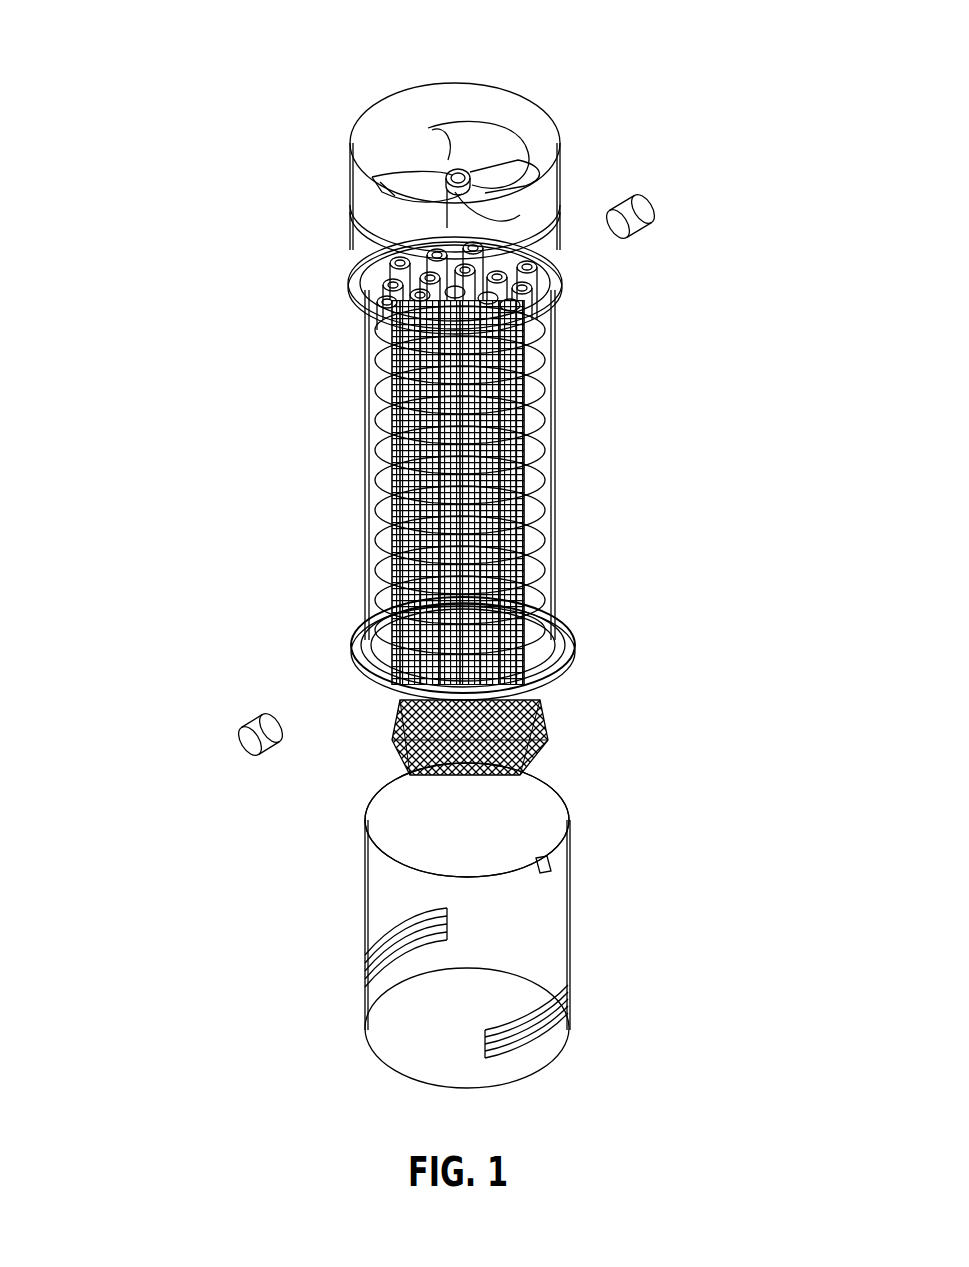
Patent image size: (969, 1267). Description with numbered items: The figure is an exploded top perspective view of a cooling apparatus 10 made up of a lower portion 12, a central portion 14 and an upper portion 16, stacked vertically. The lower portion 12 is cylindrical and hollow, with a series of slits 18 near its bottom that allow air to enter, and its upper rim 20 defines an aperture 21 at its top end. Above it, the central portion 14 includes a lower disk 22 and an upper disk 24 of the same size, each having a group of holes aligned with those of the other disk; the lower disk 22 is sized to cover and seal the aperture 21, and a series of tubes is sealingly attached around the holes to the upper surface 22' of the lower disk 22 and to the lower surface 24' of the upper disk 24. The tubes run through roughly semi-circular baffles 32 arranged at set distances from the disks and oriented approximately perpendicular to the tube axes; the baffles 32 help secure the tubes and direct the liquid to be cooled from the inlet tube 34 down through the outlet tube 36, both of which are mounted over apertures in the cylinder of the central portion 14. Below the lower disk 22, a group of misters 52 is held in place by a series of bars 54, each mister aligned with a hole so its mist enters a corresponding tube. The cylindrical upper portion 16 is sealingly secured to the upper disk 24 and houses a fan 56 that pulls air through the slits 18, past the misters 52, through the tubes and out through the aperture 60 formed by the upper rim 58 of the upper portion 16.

The cooling apparatus 10 is at (317, 423).
The lower portion 12 is at (596, 926).
The central portion 14 is at (585, 372).
The upper portion 16 is at (303, 195).
The slits 18 is at (545, 1035).
The upper rim 20 is at (578, 822).
The aperture 21 is at (415, 822).
The lower disk 22 is at (467, 640).
The upper surface of disk 22 22' is at (365, 630).
The upper disk 24 is at (456, 289).
The lower surface of disk 24 24' is at (554, 283).
The baffles 32 is at (555, 483).
The inlet tube 34 is at (638, 200).
The outlet tube 36 is at (248, 718).
The misters 52 is at (548, 713).
The bars 54 is at (522, 755).
The fan 56 is at (478, 145).
The upper rim 58 is at (358, 170).
The aperture 60 is at (393, 121).